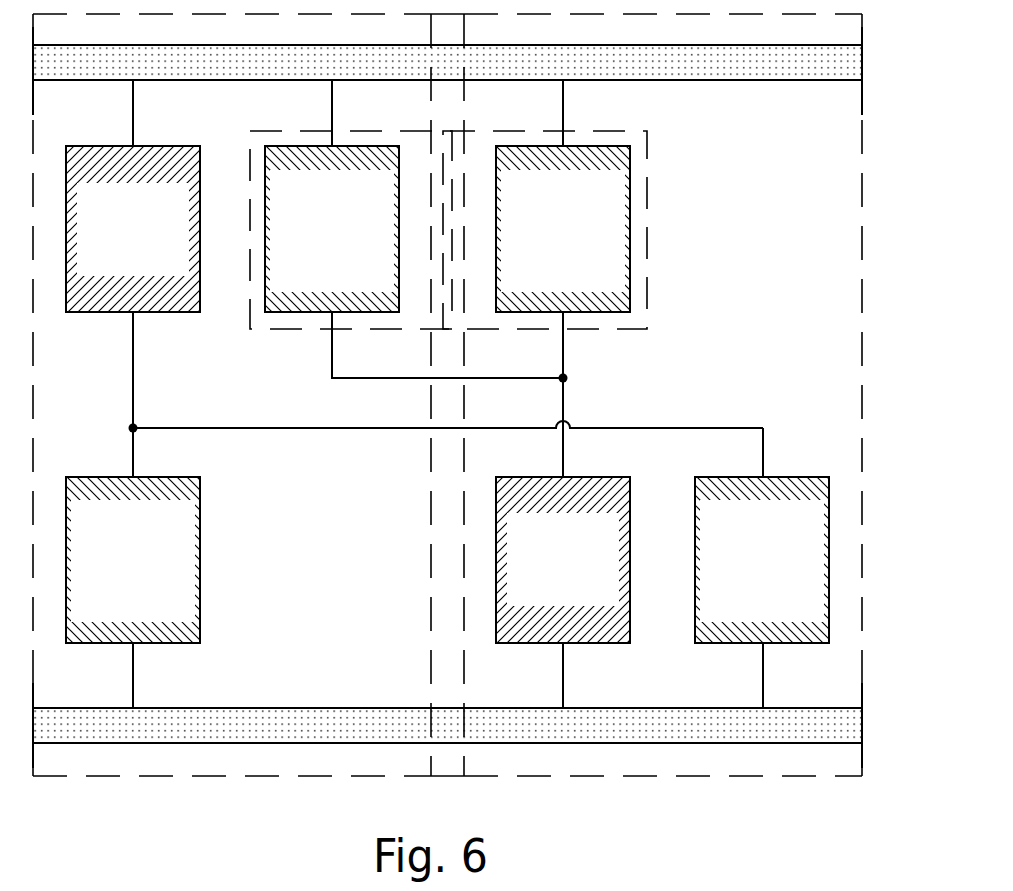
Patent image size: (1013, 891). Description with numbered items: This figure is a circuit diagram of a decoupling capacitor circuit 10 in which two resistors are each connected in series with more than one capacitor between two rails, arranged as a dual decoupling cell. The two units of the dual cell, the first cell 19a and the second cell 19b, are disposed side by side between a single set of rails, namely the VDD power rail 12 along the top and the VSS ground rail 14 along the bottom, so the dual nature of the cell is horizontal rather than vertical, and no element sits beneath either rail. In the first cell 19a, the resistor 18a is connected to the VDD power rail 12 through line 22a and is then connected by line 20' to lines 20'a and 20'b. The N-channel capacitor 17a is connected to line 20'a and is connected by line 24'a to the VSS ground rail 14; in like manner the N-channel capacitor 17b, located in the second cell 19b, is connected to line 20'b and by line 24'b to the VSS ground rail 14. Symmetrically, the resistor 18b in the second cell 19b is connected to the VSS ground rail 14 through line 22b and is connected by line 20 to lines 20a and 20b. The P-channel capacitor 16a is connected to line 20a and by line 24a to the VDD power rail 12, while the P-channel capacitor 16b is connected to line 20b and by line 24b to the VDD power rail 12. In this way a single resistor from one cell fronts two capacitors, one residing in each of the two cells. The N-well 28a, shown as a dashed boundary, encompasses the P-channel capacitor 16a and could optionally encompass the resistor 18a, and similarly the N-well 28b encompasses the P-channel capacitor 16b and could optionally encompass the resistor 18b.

The dual decoupling cell 10 is at (860, 811).
The VDD power rail 12 is at (447, 62).
The VSS ground rail 14 is at (447, 725).
The P-channel capacitor 16a is at (332, 229).
The P-channel capacitor 16b is at (563, 229).
The N-channel capacitor 17a is at (133, 560).
The N-channel capacitor 17b is at (762, 560).
The resistor 18a is at (133, 229).
The resistor 18b is at (563, 560).
The cell 1 19a is at (232, 395).
The cell 2 19b is at (663, 395).
The line 20 is at (448, 443).
The line 20' is at (153, 370).
The line 20a is at (447, 345).
The line 20b is at (586, 394).
The line 20'a is at (158, 451).
The line 20'b is at (790, 452).
The line 22a is at (157, 113).
The line 22b is at (588, 675).
The line 24a is at (356, 113).
The line 24b is at (588, 113).
The line 24'a is at (160, 675).
The line 24'b is at (790, 675).
The N-well 28a is at (258, 329).
The N-well 28b is at (647, 288).